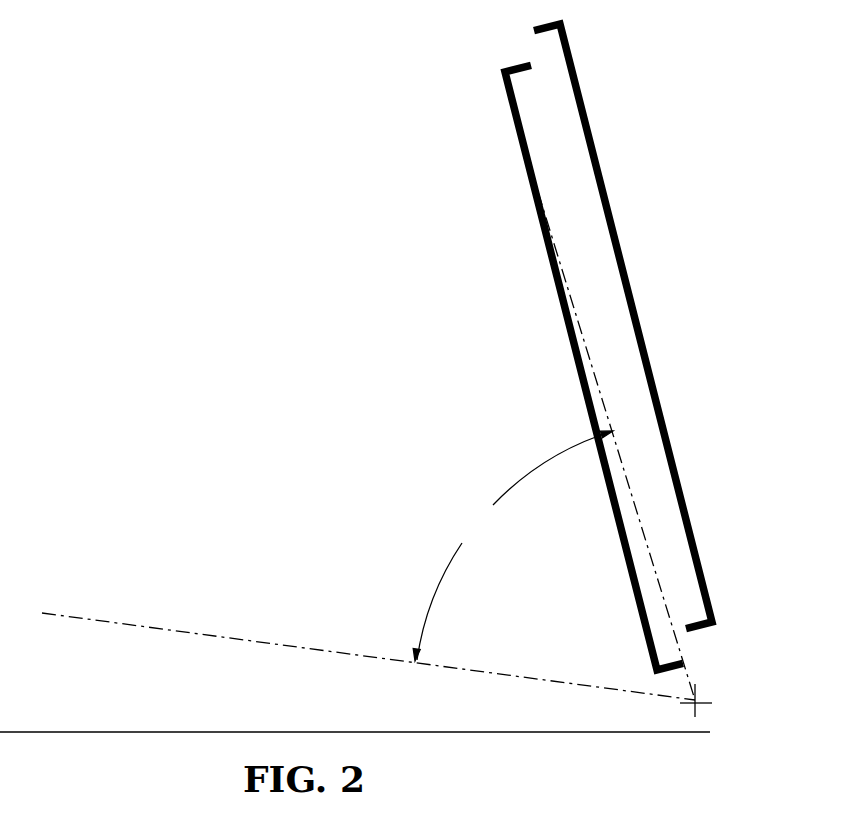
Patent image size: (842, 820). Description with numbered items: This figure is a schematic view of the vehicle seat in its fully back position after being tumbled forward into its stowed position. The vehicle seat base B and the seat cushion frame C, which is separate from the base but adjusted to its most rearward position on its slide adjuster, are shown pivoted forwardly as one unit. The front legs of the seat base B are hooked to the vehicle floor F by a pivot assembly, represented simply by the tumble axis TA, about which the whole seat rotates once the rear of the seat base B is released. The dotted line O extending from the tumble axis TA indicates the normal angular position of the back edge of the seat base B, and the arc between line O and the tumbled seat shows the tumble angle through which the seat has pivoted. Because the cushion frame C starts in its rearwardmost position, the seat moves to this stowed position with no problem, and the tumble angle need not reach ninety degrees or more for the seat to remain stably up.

The vehicle seat base B is at (519, 134).
The seat cushion frame C is at (567, 36).
The normal angular position line O is at (350, 655).
The vehicle floor F is at (172, 732).
The tumble axis TA is at (696, 698).